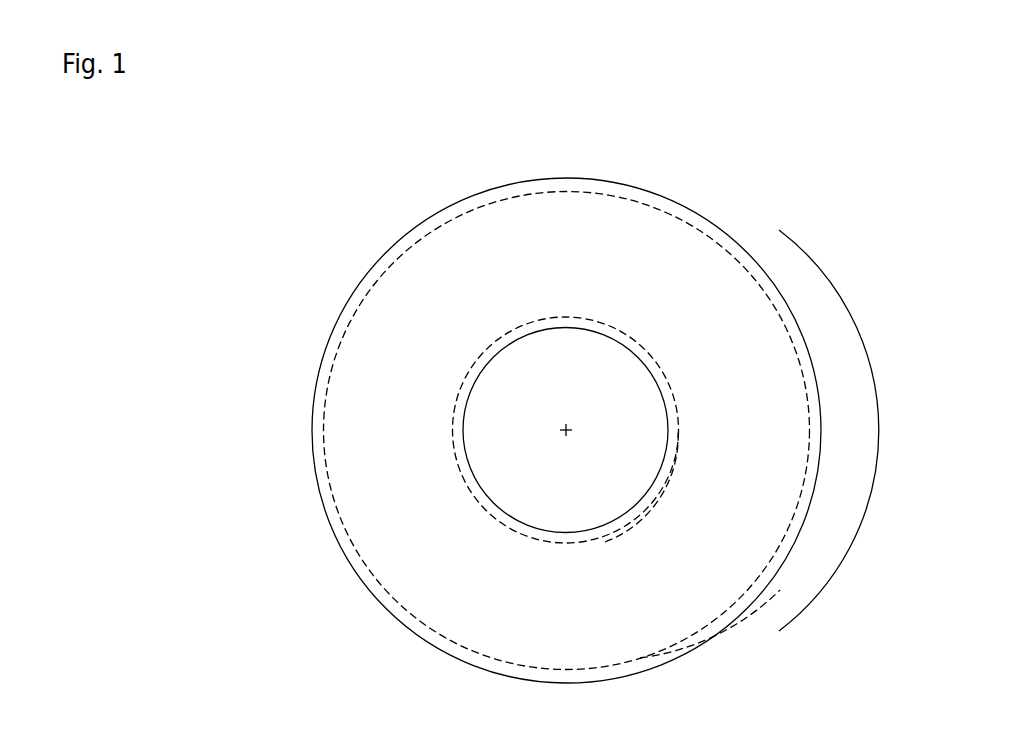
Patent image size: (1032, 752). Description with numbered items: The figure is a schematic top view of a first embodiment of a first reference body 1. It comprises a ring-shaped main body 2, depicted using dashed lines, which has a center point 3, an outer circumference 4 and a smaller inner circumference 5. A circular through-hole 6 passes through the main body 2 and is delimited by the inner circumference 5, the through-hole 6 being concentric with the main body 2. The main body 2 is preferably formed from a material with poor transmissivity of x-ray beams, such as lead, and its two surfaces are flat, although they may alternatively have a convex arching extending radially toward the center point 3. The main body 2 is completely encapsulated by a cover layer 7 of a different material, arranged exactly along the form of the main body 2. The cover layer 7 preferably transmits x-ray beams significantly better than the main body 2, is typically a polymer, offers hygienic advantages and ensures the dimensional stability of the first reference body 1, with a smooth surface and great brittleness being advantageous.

The first reference body 1 is at (748, 175).
The ring-shaped main body 2 is at (688, 308).
The center point 3 is at (567, 429).
The outer circumference 4 is at (810, 365).
The inner circumference 5 is at (680, 432).
The circular through-hole 6 is at (613, 467).
The cover layer 7 is at (592, 533).